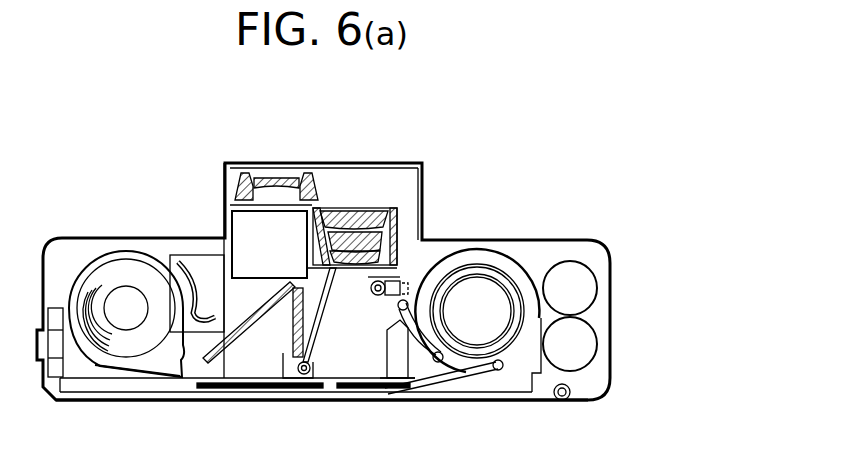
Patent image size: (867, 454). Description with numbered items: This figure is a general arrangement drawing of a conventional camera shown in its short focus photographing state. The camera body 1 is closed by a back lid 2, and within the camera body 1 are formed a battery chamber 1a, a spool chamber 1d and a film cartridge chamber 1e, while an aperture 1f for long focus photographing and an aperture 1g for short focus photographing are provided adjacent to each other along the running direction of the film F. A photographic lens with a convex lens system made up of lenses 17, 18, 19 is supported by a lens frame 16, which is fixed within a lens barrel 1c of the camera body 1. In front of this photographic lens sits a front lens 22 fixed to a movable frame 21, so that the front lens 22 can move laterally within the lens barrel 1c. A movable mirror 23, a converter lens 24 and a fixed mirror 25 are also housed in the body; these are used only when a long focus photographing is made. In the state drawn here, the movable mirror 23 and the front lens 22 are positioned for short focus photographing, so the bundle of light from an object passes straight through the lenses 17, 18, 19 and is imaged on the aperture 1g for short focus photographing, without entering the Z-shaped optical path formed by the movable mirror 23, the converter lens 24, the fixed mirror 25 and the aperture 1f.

The camera body 1 is at (573, 240).
The battery chamber 1a is at (583, 281).
The lens barrel 1c is at (412, 213).
The spool chamber 1d is at (505, 265).
The film cartridge chamber 1e is at (98, 252).
The aperture for long focus photographing 1f is at (222, 370).
The aperture for short focus photographing 1g is at (335, 380).
The back lid 2 is at (475, 398).
The lens frame 16 is at (322, 208).
The lens 17 is at (356, 218).
The lens 18 is at (386, 232).
The lens 19 is at (355, 268).
The movable frame 21 is at (243, 172).
The front lens 22 is at (275, 180).
The movable mirror 23 is at (318, 326).
The converter lens 24 is at (293, 327).
The fixed mirror 25 is at (240, 326).
The film F is at (152, 372).